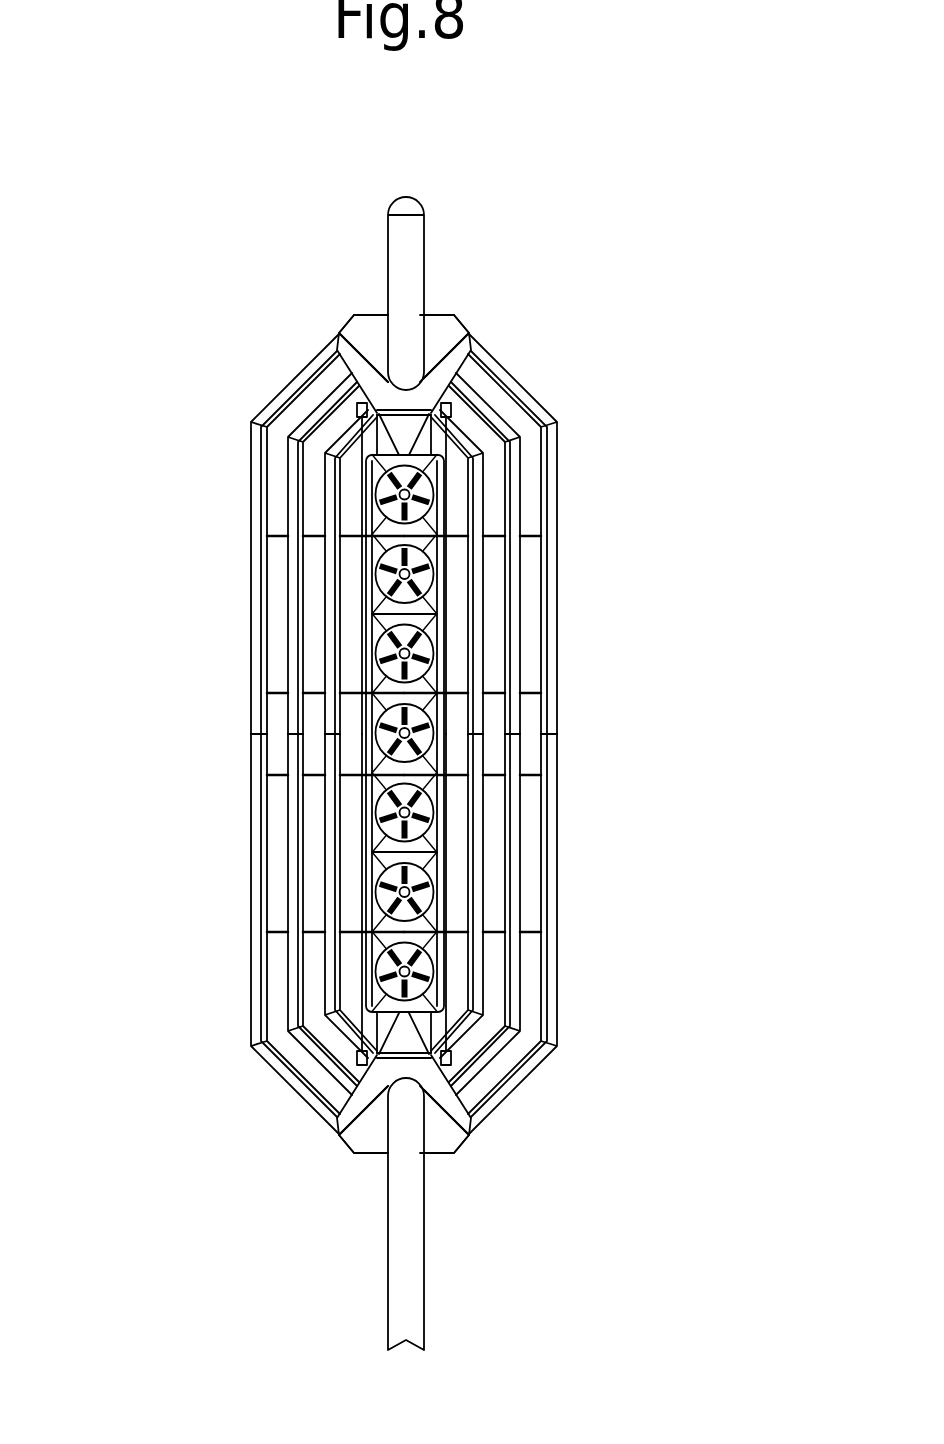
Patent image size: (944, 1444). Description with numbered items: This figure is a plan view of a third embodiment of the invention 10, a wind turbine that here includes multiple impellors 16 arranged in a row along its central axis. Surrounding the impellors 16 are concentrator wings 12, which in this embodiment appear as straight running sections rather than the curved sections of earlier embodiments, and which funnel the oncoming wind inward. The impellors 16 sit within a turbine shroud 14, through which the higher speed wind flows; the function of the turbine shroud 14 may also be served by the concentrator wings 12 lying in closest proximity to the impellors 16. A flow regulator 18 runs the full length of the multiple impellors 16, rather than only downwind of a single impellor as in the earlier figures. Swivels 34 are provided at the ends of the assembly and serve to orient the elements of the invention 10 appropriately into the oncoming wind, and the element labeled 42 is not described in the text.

The invention 10 is at (152, 906).
The concentrator wings 12 is at (512, 382).
The turbine shroud 14 is at (438, 628).
The impellors 16 is at (383, 660).
The flow regulator 18 is at (438, 442).
The swivel 34 is at (382, 373).
The connecting rod / cable 42 is at (414, 262).